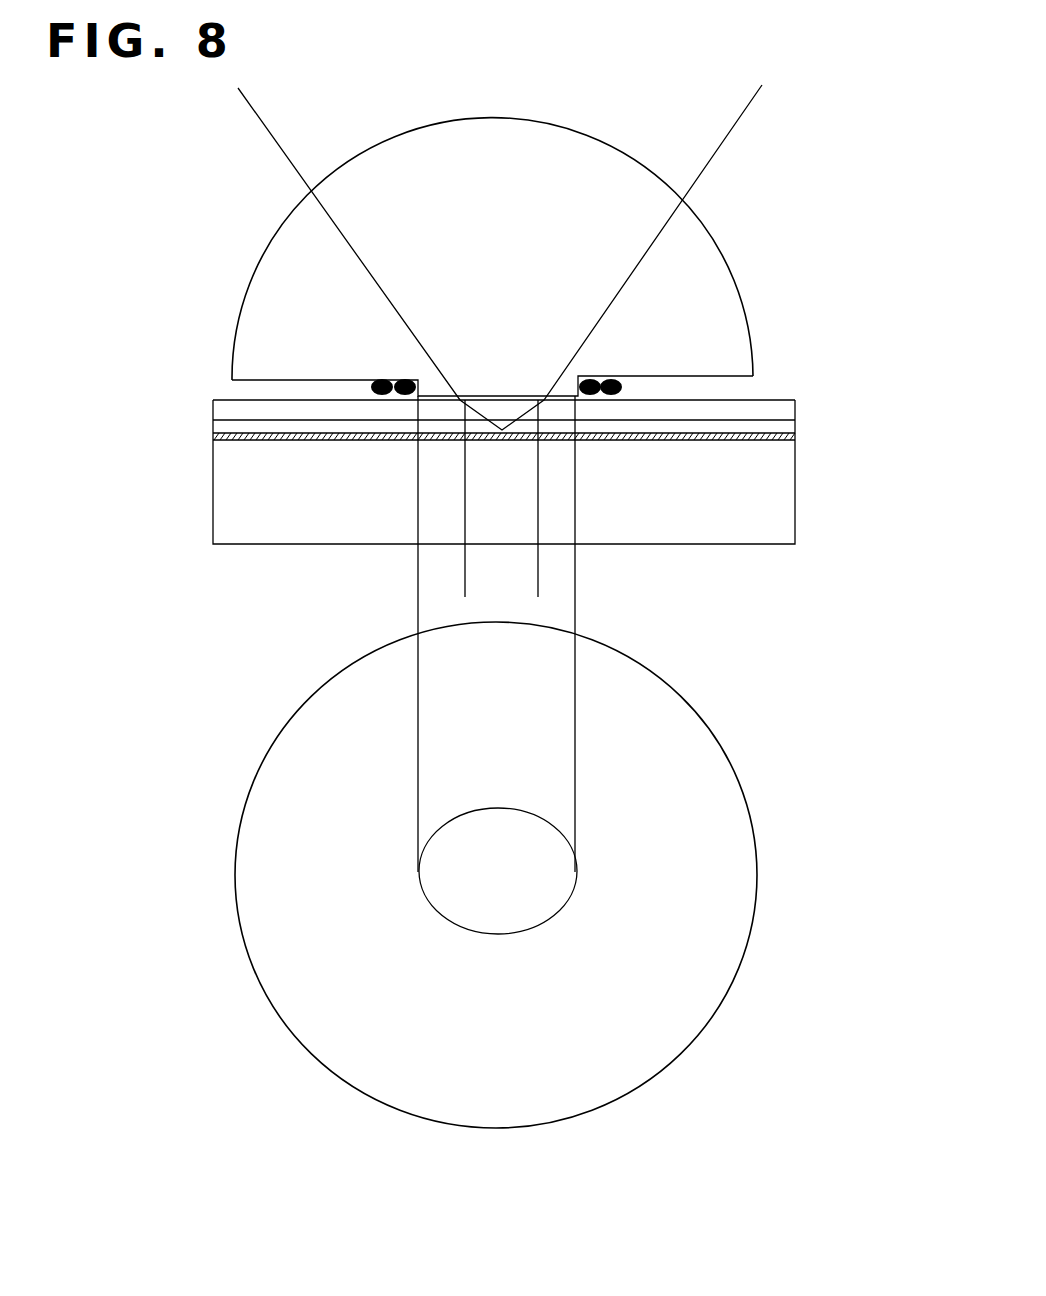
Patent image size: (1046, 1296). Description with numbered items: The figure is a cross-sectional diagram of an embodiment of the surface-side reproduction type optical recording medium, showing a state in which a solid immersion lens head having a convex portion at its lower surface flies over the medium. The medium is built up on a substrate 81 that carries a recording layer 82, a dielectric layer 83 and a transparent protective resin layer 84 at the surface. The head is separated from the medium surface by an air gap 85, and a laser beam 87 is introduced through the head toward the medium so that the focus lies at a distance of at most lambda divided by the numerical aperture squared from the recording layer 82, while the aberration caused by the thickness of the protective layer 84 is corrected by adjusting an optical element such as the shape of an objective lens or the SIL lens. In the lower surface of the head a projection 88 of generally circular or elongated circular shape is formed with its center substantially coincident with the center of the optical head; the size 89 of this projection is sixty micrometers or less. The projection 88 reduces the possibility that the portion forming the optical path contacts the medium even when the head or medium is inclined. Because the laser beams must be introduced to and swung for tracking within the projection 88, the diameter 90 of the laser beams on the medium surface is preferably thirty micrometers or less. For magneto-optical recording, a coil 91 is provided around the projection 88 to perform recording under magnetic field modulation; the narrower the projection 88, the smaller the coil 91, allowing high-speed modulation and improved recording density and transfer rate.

The substrate 81 is at (797, 490).
The recording layer 82 is at (798, 433).
The dielectric layer 83 is at (798, 421).
The transparent protective resin layer 84 is at (798, 408).
The air gap 85 is at (530, 402).
The laser beam 87 is at (692, 167).
The convex portion at a lower surface of SIL head 88 is at (438, 388).
The size of convex portion 89 is at (575, 688).
The diameter L2 of laser beams on the medium surface 90 is at (538, 578).
The coil 91 is at (380, 395).